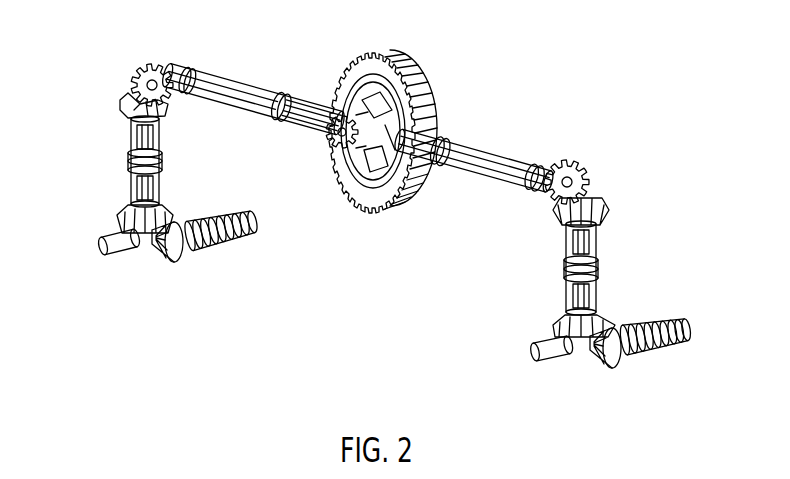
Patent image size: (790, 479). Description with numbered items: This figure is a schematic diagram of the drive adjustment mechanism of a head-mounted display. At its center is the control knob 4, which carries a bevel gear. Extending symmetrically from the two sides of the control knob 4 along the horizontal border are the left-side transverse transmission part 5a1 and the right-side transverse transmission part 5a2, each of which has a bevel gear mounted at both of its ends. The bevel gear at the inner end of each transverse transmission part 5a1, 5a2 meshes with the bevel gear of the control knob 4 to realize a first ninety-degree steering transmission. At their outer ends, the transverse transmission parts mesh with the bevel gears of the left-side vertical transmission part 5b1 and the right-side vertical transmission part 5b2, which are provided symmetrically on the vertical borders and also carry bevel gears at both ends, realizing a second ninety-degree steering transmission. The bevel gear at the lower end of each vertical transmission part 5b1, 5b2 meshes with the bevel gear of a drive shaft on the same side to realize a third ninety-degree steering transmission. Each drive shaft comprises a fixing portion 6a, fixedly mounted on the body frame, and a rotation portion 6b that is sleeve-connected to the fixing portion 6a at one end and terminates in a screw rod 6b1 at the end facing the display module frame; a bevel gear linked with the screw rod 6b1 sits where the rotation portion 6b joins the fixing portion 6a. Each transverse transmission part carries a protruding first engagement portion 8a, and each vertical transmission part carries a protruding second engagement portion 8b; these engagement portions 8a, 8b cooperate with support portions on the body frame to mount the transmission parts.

The control knob 4 is at (420, 75).
The left-side transverse transmission part 5a1 is at (225, 92).
The right-side transverse transmission part 5a2 is at (472, 147).
The left-side vertical transmission part 5b1 is at (162, 147).
The right-side vertical transmission part 5b2 is at (563, 245).
The fixing portion 6a is at (110, 253).
The rotation portion 6b is at (185, 242).
The screw rod 6b1 is at (248, 237).
The first engagement portion 8a is at (192, 77).
The second engagement portion 8b is at (128, 168).